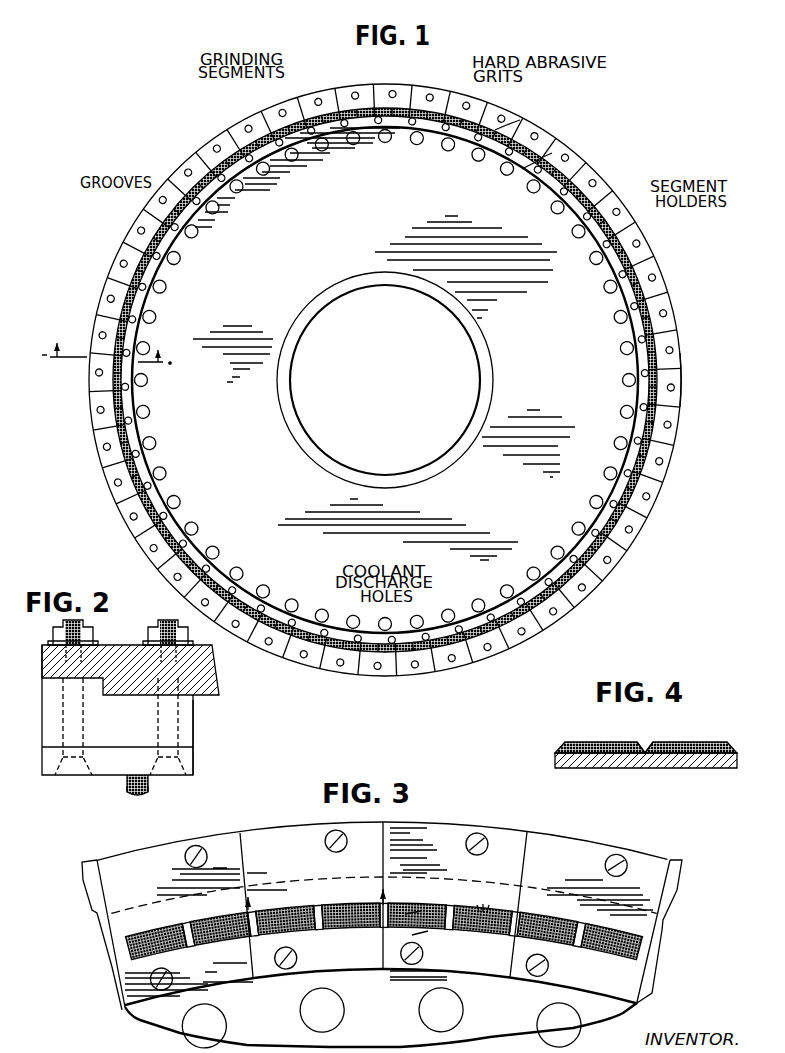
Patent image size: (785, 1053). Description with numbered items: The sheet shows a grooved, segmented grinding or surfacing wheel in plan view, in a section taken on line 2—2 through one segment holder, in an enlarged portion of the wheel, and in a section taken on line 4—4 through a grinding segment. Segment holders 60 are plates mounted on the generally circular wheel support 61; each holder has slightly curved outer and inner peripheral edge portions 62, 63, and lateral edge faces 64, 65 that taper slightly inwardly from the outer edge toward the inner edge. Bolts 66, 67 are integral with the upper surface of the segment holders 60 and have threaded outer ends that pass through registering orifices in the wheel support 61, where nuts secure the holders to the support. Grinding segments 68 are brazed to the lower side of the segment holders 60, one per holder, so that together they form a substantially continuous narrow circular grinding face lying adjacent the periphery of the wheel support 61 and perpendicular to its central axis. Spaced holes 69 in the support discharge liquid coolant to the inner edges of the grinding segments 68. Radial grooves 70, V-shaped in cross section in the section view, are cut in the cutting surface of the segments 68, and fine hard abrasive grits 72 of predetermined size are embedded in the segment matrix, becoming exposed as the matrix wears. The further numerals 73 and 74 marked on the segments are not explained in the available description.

In FIG. 1, the section line 2— 2 is at (107, 349).
In FIG. 3, the section line 4— 4 is at (313, 902).
In FIG. 1, the segment holders 60 is at (635, 227).
In FIG. 2, the segment holders 60 is at (48, 762).
In FIG. 3, the segment holders 60 is at (538, 837).
In FIG. 1, the wheel support 61 is at (392, 232).
In FIG. 2, the wheel support 61 is at (48, 658).
In FIG. 3, the wheel support 61 is at (380, 1028).
In FIG. 1, the outer peripheral edge portion 62 is at (655, 258).
In FIG. 2, the outer peripheral edge portion 62 is at (42, 750).
In FIG. 3, the outer peripheral edge portion 62 is at (463, 823).
In FIG. 1, the inner peripheral edge portion 63 is at (615, 272).
In FIG. 2, the inner peripheral edge portion 63 is at (198, 755).
In FIG. 3, the inner peripheral edge portion 63 is at (372, 976).
In FIG. 1, the lateral edge face 64 is at (637, 327).
In FIG. 3, the lateral edge face 64 is at (525, 868).
In FIG. 1, the lateral edge face 65 is at (672, 365).
In FIG. 3, the lateral edge face 65 is at (663, 897).
In FIG. 1, the bolt 66 is at (667, 458).
In FIG. 2, the bolt 66 is at (83, 697).
In FIG. 3, the bolt 66 is at (470, 845).
In FIG. 1, the bolt 67 is at (640, 440).
In FIG. 2, the bolt 67 is at (158, 727).
In FIG. 3, the bolt 67 is at (550, 970).
In FIG. 1, the grinding segments 68 is at (240, 137).
In FIG. 2, the grinding segments 68 is at (135, 796).
In FIG. 4, the grinding segments 68 is at (578, 737).
In FIG. 3, the grinding segments 68 is at (343, 903).
In FIG. 1, the holes 69 is at (447, 612).
In FIG. 3, the holes 69 is at (462, 1015).
In FIG. 1, the radial grooves 70 is at (162, 218).
In FIG. 4, the radial grooves 70 is at (648, 752).
In FIG. 3, the radial grooves 70 is at (377, 920).
In FIG. 1, the hard abrasive grits 72 is at (512, 136).
In FIG. 3, the hard abrasive grits 72 is at (497, 922).
In FIG. 1, the grinding face of segment 73 is at (543, 157).
In FIG. 2, the grinding face of segment 73 is at (125, 792).
In FIG. 3, the grinding face of segment 73 is at (413, 913).
In FIG. 1, the backing of segment 74 is at (530, 165).
In FIG. 2, the backing of segment 74 is at (148, 792).
In FIG. 3, the backing of segment 74 is at (420, 932).